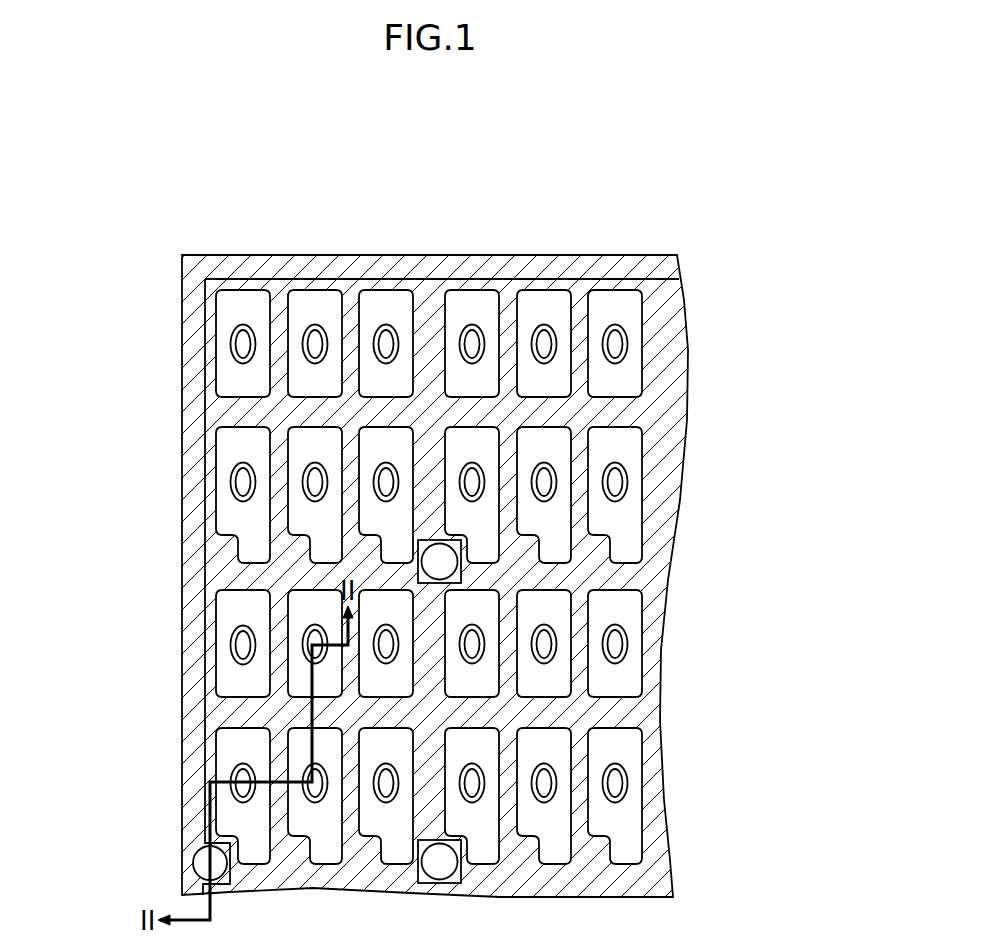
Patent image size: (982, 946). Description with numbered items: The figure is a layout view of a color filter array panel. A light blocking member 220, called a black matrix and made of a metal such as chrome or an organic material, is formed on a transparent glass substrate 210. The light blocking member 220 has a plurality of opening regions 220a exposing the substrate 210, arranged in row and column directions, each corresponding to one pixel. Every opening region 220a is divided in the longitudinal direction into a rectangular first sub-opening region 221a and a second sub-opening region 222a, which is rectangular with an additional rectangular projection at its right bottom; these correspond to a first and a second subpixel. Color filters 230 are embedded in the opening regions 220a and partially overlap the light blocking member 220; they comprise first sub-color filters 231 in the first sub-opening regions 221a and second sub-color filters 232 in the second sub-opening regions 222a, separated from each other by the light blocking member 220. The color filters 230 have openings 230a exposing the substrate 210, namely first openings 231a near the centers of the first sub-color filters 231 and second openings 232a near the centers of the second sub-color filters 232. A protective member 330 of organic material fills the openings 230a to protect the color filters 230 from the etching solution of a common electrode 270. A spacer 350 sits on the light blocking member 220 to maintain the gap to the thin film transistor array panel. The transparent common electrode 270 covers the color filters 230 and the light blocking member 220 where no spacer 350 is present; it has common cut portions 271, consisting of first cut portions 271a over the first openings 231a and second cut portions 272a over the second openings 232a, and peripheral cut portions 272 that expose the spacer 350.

The substrate 210 is at (348, 255).
The light blocking member 220 is at (442, 270).
The common electrode 270 is at (276, 270).
The color filters 230 is at (556, 365).
The first sub-color filters 231 is at (533, 322).
The second sub-color filters 232 is at (557, 468).
The openings 230a is at (156, 426).
The first openings 231a is at (235, 347).
The second openings 232a is at (240, 473).
The opening regions 220a is at (708, 426).
The first sub-opening region 221a is at (588, 377).
The second sub-opening region 222a is at (588, 447).
The protective member 330 is at (612, 483).
The common cut portions 271 is at (156, 727).
The first cut portions 271a is at (236, 647).
The second cut portions 272a is at (240, 770).
The peripheral cut portions 272 is at (462, 572).
The spacer 350 is at (192, 853).